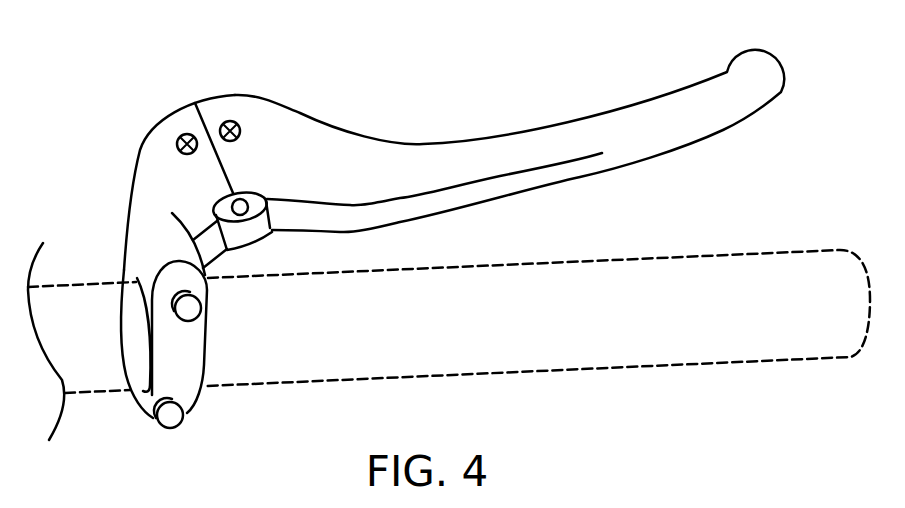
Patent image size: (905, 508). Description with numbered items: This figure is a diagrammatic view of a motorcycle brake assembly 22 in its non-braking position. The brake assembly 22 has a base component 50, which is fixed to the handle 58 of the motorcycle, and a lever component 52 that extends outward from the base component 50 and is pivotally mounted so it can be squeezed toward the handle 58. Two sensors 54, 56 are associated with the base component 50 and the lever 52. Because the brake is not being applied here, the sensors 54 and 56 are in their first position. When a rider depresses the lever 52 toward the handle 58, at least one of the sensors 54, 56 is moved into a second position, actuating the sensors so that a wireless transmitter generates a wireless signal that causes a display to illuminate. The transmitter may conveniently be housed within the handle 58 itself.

The brake assembly 22 is at (464, 71).
The base component 50 is at (133, 188).
The lever component 52 is at (630, 110).
The sensor 54 is at (185, 134).
The sensor 56 is at (231, 120).
The handle 58 is at (748, 363).